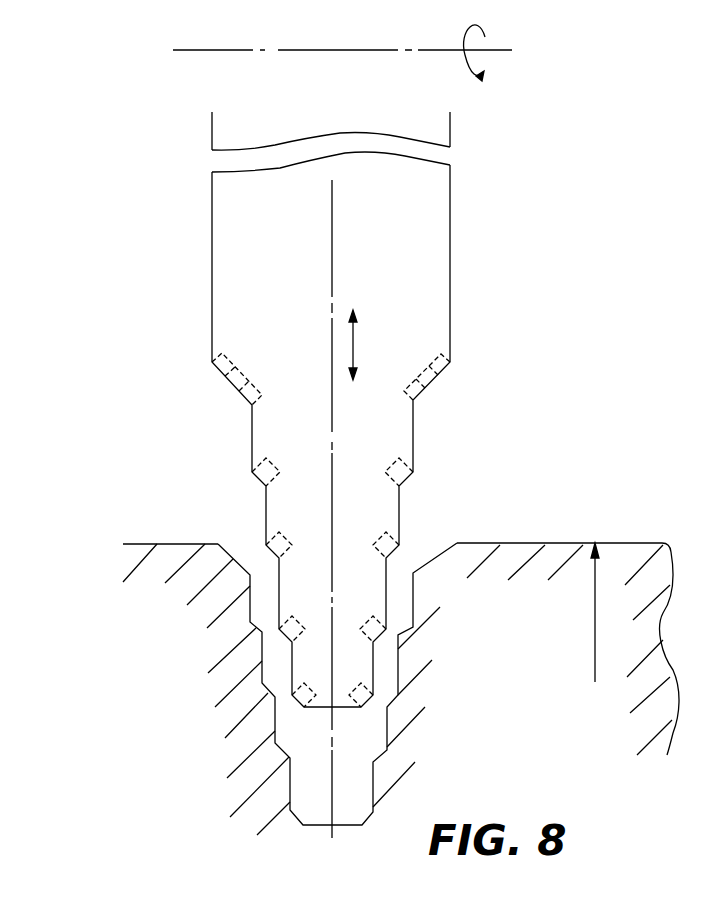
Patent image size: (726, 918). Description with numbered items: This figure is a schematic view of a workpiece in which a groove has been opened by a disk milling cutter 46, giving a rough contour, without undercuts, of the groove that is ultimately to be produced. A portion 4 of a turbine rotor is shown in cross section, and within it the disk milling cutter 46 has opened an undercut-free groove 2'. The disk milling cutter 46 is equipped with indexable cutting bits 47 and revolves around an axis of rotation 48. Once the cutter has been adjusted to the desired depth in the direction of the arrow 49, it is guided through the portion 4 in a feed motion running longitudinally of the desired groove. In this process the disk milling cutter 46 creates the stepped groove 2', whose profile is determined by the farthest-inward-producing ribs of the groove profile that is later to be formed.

The disk milling cutter 46 is at (399, 256).
The indexable cutting bits 47 is at (417, 400).
The axis of rotation 48 is at (473, 83).
The arrow 49 is at (355, 350).
The undercut-free groove 2' is at (337, 669).
The portion of the turbine rotor 4 is at (494, 648).